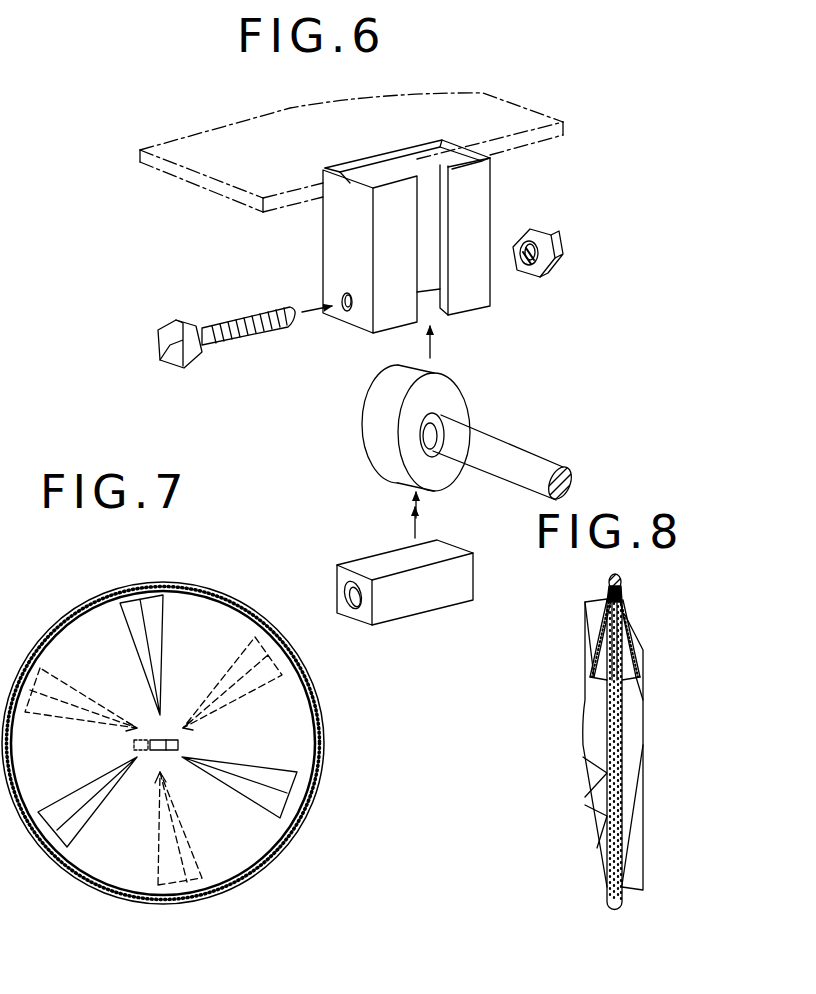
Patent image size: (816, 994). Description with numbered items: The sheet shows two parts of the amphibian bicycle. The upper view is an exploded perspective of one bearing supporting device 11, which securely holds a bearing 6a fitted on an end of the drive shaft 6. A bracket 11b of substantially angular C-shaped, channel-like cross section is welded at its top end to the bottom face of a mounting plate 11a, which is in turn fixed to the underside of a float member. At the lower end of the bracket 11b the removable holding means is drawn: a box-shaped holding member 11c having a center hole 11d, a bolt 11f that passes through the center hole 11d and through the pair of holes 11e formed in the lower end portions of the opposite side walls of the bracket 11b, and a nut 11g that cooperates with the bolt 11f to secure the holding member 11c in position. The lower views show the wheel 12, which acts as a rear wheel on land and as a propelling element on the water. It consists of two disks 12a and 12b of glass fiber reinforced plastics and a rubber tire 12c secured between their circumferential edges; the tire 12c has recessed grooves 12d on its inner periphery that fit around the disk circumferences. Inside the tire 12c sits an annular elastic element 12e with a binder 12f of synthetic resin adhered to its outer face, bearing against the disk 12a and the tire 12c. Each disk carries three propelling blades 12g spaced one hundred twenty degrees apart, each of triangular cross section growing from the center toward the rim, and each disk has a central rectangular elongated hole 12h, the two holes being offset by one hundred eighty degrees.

In FIG. 6, the drive shaft 6 is at (520, 455).
In FIG. 6, the bearing 6a is at (467, 393).
In FIG. 6, the bearing supporting device 11 is at (544, 298).
In FIG. 6, the mounting plate 11a is at (505, 108).
In FIG. 6, the bracket 11b is at (338, 241).
In FIG. 6, the holding member 11c is at (420, 602).
In FIG. 6, the center hole 11d is at (348, 590).
In FIG. 6, the hole 11e is at (343, 313).
In FIG. 6, the bolt 11f is at (192, 353).
In FIG. 6, the nut 11g is at (547, 230).
In FIG. 7, the wheel 12 is at (293, 663).
In FIG. 8, the wheel 12 is at (632, 616).
In FIG. 7, the disk 12a is at (255, 827).
In FIG. 8, the disk 12a is at (633, 720).
In FIG. 8, the disk 12b is at (598, 704).
In FIG. 7, the tire 12c is at (312, 738).
In FIG. 8, the tire 12c is at (611, 581).
In FIG. 8, the recessed groove 12d is at (621, 590).
In FIG. 8, the annular elastic element 12e is at (611, 628).
In FIG. 8, the binder 12f is at (607, 611).
In FIG. 7, the propelling blade 12g is at (285, 779).
In FIG. 8, the propelling blade 12g is at (591, 837).
In FIG. 7, the elongated hole 12h is at (173, 738).